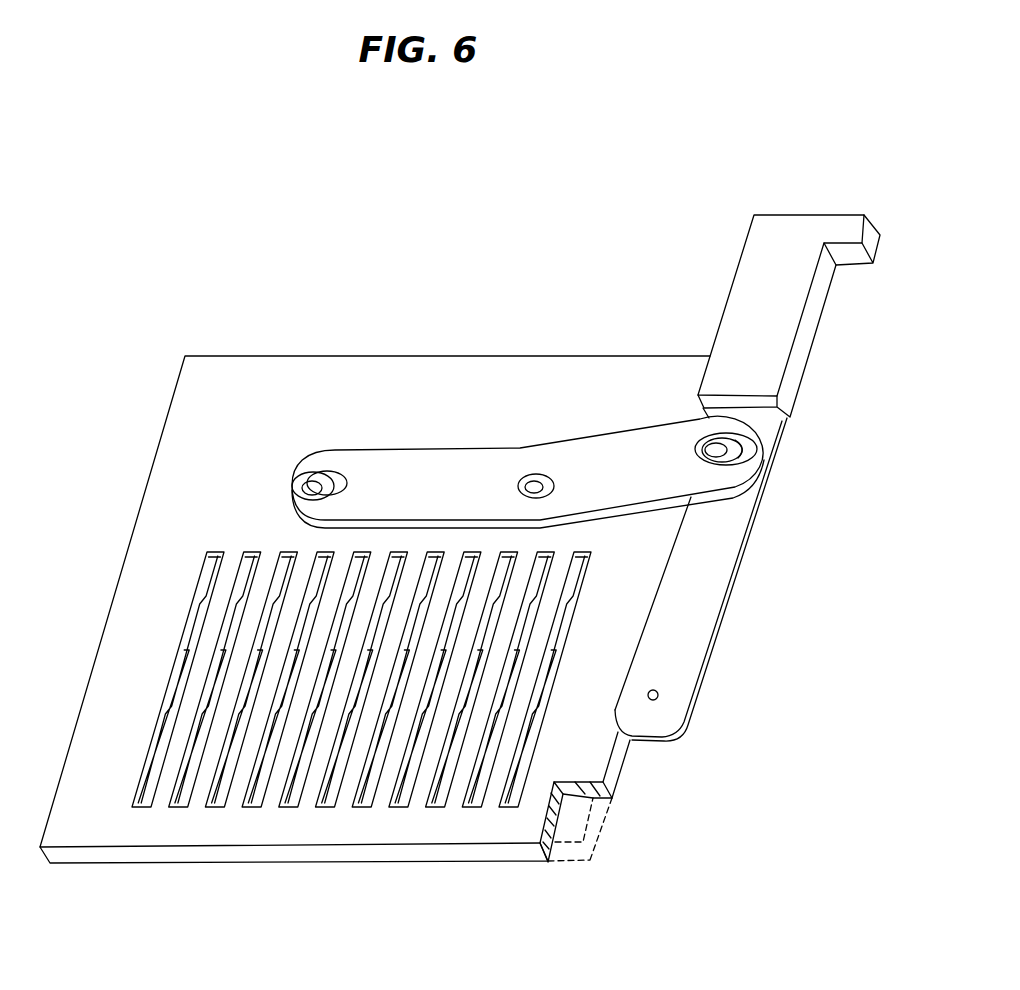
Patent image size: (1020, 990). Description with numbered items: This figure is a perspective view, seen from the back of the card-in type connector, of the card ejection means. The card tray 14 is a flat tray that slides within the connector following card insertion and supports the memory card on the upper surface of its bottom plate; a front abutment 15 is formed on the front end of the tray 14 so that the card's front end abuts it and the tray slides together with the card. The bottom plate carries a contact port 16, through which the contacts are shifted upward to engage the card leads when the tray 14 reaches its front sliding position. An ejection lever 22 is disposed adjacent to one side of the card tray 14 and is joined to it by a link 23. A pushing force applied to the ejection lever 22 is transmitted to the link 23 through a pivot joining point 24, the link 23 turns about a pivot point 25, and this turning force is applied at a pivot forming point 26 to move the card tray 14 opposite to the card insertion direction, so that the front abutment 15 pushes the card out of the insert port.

The card tray 14 is at (375, 388).
The front abutment 15 is at (553, 845).
The contact port 16 is at (472, 775).
The ejection lever 22 is at (808, 327).
The link 23 is at (482, 390).
The pivot joining point 24 is at (708, 436).
The pivot point 25 is at (534, 475).
The pivot forming point 26 is at (317, 474).